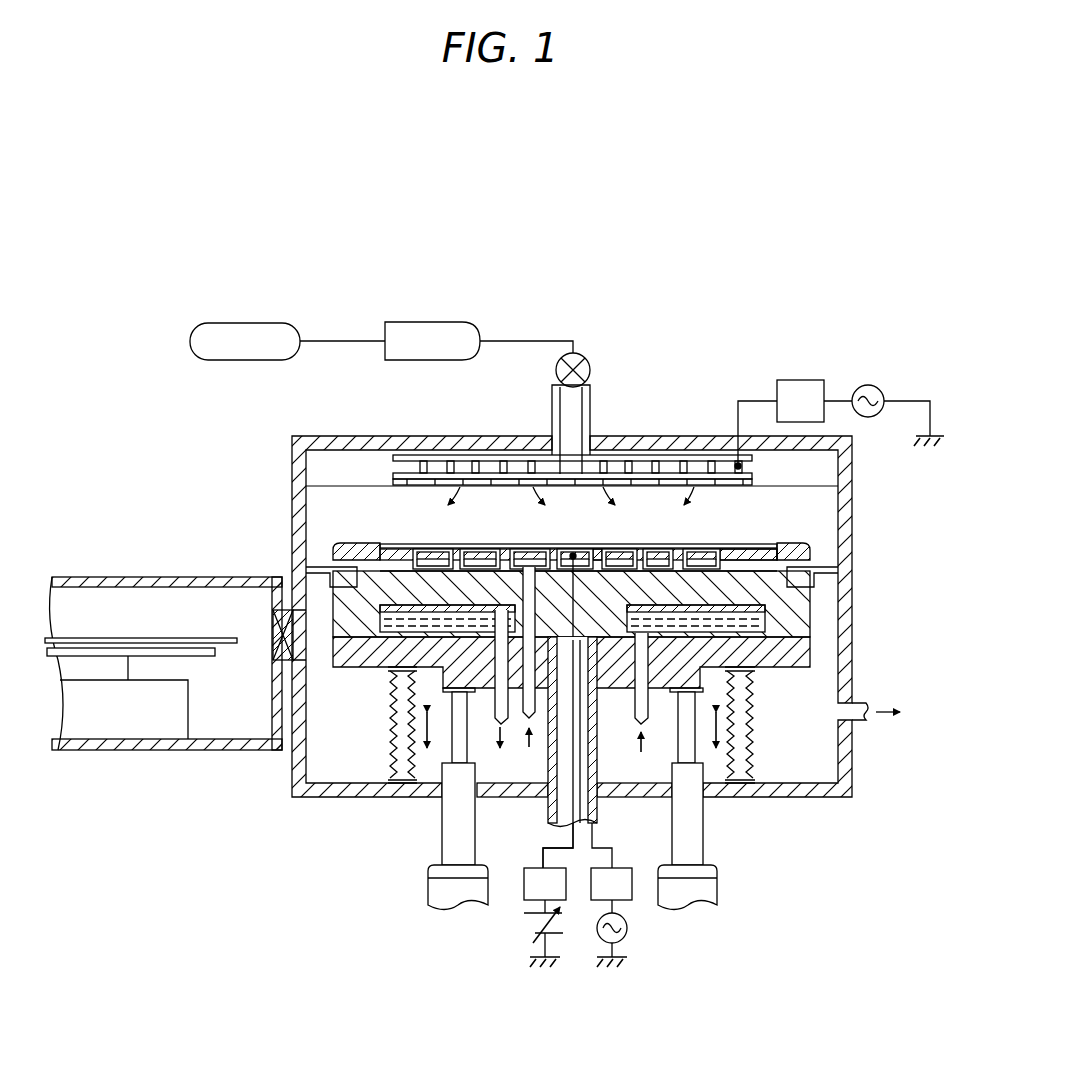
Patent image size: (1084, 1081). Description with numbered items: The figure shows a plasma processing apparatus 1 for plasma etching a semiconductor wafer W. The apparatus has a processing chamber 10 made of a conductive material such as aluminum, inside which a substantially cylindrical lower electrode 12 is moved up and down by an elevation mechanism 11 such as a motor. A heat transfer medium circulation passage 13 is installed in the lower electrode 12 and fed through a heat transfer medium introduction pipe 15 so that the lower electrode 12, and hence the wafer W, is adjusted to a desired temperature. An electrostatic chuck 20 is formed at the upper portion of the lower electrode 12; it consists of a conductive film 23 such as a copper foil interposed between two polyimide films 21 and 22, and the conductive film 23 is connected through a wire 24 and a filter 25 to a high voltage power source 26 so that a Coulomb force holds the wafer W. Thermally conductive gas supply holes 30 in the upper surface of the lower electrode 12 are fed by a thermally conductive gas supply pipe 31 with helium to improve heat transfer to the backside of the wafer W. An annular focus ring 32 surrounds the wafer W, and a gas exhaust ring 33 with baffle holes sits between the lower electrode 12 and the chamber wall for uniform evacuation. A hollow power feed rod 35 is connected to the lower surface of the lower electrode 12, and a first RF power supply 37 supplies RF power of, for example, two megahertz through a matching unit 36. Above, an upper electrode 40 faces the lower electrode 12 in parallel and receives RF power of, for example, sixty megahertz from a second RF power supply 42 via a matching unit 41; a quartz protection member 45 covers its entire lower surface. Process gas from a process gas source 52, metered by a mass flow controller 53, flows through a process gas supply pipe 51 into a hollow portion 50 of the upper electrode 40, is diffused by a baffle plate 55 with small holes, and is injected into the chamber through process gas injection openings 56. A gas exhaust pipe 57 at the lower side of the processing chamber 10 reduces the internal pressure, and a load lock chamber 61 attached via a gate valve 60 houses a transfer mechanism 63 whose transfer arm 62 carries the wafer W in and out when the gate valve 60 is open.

The plasma processing apparatus 1 is at (663, 318).
The processing chamber 10 is at (852, 497).
The elevation mechanism 11 is at (442, 820).
The lower electrode 12 is at (812, 600).
The heat transfer medium circulation passage 13 is at (765, 625).
The heat transfer medium introduction pipe 15 is at (488, 700).
The electrostatic chuck 20 is at (565, 610).
The film 21 is at (655, 551).
The film 22 is at (713, 552).
The conductive film 23 is at (624, 551).
The wire 24 is at (543, 850).
The filter 25 is at (522, 888).
The high voltage power source 26 is at (532, 940).
The thermally conductive gas supply holes 30 is at (420, 550).
The thermally conductive gas supply pipe 31 is at (538, 705).
The focus ring 32 is at (345, 544).
The gas exhaust ring 33 is at (318, 567).
The power feed rod 35 is at (598, 808).
The matching unit 36 is at (620, 868).
The first RF power supply 37 is at (628, 928).
The upper electrode 40 is at (403, 455).
The matching unit 41 is at (793, 380).
The second RF power supply 42 is at (868, 385).
The protection member 45 is at (796, 487).
The hollow portion 50 is at (511, 466).
The process gas supply pipe 51 is at (591, 393).
The process gas source 52 is at (228, 323).
The mass flow controller 53 is at (425, 322).
The baffle plate 55 is at (457, 473).
The process gas injection openings 56 is at (430, 485).
The gas exhaust pipe 57 is at (862, 703).
The gate valve 60 is at (272, 735).
The load lock chamber 61 is at (150, 577).
The transfer arm 62 is at (90, 638).
The transfer mechanism 63 is at (120, 740).
The semiconductor wafer W is at (513, 545).